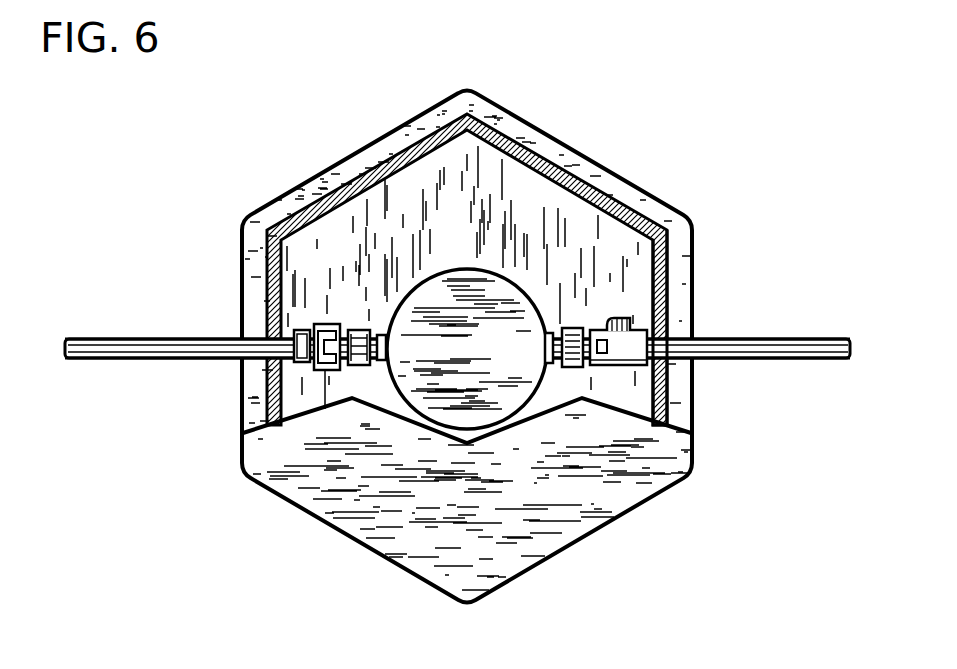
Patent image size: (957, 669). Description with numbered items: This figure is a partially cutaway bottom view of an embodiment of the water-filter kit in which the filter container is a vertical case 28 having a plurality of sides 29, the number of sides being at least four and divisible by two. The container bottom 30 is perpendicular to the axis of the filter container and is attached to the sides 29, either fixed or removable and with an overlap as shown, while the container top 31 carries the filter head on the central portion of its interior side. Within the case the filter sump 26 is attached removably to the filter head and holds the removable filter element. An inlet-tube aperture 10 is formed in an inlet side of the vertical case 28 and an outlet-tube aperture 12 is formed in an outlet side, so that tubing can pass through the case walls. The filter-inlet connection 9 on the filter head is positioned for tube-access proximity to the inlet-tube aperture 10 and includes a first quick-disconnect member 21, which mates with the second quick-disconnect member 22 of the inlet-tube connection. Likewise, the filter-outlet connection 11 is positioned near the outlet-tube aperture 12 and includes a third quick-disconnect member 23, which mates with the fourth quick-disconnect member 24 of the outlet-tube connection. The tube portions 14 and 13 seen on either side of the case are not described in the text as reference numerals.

The vertical case 28 is at (213, 133).
The plurality of sides 29 is at (393, 160).
The container top 31 is at (532, 218).
The container bottom 30 is at (373, 510).
The outlet-tube aperture 12 is at (263, 348).
The pipe 14 is at (207, 345).
The outlet pipe 13 is at (725, 343).
The inlet-tube aperture 10 is at (668, 357).
The filter sump 26 is at (463, 367).
The fourth quick-disconnect member 24 is at (312, 332).
The third quick-disconnect member 23 is at (348, 330).
The filter-outlet connection 11 is at (387, 332).
The filter-inlet connection 9 is at (560, 332).
The first quick-disconnect member 21 is at (583, 327).
The second quick-disconnect member 22 is at (625, 340).